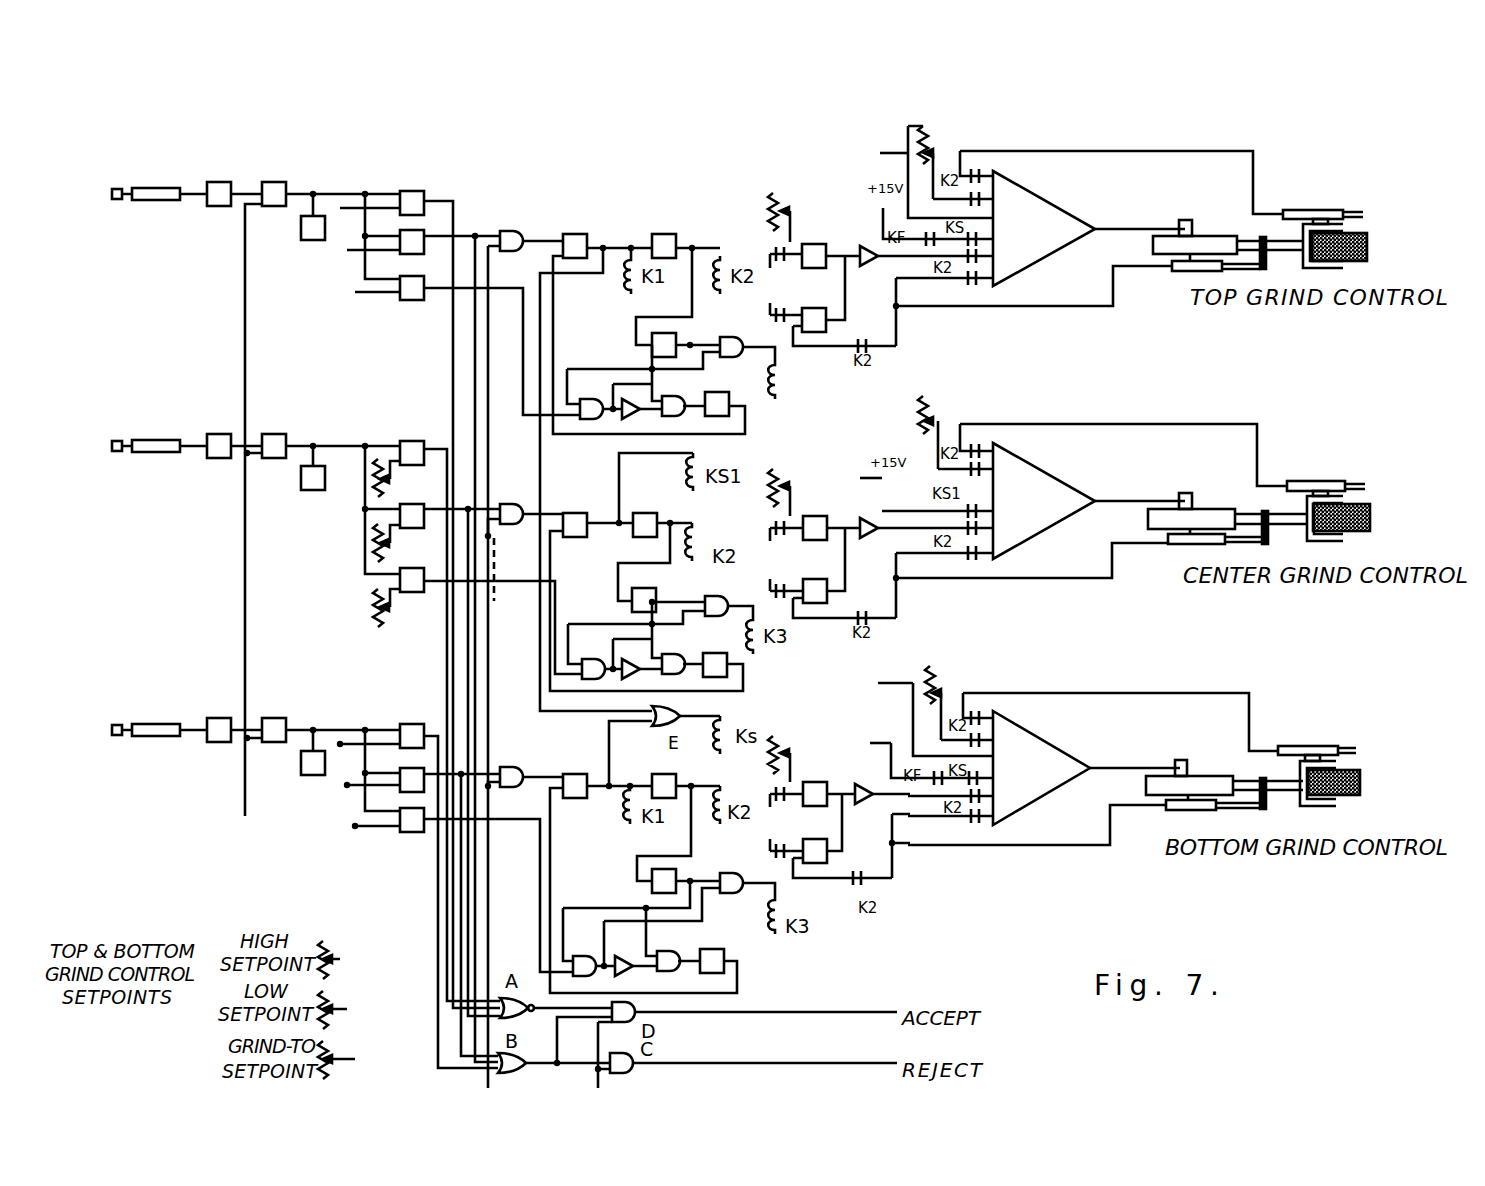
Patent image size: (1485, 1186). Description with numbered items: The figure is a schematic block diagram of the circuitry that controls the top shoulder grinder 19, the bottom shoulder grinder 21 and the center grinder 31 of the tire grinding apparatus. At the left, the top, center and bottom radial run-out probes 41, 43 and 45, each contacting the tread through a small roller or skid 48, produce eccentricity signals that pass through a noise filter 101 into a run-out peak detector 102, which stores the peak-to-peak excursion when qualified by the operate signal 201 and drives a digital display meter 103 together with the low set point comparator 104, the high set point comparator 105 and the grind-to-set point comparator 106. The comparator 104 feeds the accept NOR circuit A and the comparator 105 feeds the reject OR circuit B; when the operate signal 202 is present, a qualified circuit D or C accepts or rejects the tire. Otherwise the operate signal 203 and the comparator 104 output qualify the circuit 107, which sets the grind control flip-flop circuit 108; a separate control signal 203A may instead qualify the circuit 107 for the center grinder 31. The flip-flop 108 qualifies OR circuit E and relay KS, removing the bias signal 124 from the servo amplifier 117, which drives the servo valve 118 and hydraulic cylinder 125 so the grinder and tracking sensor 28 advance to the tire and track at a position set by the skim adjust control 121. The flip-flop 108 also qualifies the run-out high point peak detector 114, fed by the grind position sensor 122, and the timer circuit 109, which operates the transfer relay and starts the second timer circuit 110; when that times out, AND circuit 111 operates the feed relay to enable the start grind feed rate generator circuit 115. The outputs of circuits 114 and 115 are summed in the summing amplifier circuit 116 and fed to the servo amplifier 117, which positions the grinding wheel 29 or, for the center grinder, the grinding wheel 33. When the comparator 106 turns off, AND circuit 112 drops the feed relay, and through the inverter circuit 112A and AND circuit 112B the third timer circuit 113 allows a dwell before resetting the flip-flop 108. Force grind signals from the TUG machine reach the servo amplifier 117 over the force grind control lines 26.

The top shoulder grinder 19 is at (1350, 228).
The bottom shoulder grinder 21 is at (1333, 805).
The force grind control lines 26 is at (883, 418).
The tracking sensor 28 is at (1328, 480).
The grinding wheel 29 is at (1367, 245).
The center grinder 31 is at (1356, 496).
The grinding wheel 33 is at (1370, 518).
The top radial run-out probe 41 is at (158, 201).
The center radial run-out probe 43 is at (160, 438).
The bottom radial run-out probe 45 is at (157, 722).
The roller or skid 48 is at (116, 736).
The noise filter 101 is at (214, 744).
The run-out peak detector 102 is at (274, 718).
The digital display meter 103 is at (312, 775).
The low set point comparator 104 is at (412, 774).
The high set point comparator 105 is at (412, 724).
The grind-to-set point comparator 106 is at (412, 833).
The qualifying circuit 107 is at (512, 767).
The grind control flip-flop circuit 108 is at (572, 774).
The timer circuit 109 is at (663, 774).
The second timer circuit 110 is at (670, 870).
The AND circuit 111 is at (730, 873).
The AND circuit 112 is at (581, 956).
The inverter circuit 112A is at (622, 957).
The AND circuit 112B is at (668, 951).
The third timer circuit 113 is at (720, 950).
The run-out high point peak detector 114 is at (815, 863).
The start grind feed rate generator circuit 115 is at (815, 782).
The summing amplifier circuit 116 is at (857, 797).
The servo amplifier 117 is at (1043, 493).
The servo valve 118 is at (1185, 492).
The skim adjust control 121 is at (930, 408).
The grind position sensor 122 is at (1172, 544).
The servo amplifier bias signal 124 is at (862, 603).
The hydraulic cylinder 125 is at (1148, 518).
The operate signal 201 is at (256, 538).
The operate signal 202 is at (598, 1087).
The operate signal 203 is at (488, 1080).
The separate control signal 203A is at (494, 606).